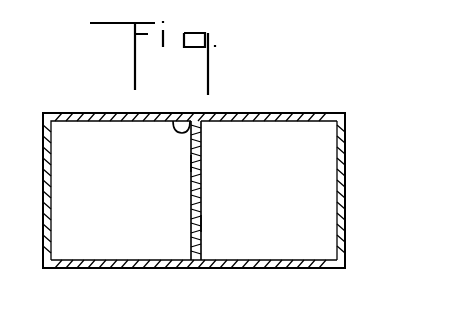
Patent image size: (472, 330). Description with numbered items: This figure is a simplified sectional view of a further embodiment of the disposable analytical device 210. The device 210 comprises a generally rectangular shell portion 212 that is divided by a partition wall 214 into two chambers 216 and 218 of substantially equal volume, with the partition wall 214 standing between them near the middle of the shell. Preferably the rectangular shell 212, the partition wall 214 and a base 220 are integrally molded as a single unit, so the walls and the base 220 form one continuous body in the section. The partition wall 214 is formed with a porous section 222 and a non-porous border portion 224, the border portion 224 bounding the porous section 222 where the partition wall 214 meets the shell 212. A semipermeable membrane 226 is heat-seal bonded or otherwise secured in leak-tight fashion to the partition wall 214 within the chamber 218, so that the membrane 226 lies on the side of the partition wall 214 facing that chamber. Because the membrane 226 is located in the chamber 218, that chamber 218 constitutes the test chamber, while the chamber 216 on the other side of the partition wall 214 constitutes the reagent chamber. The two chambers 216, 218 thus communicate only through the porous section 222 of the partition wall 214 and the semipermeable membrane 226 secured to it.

The disposable analytical device 210 is at (400, 103).
The shell portion 212 is at (347, 186).
The partition wall 214 is at (188, 199).
The reagent chamber 216 is at (300, 201).
The test chamber 218 is at (127, 179).
The base 220 is at (150, 248).
The porous section 222 is at (190, 164).
The non-porous border portion 224 is at (171, 122).
The semipermeable membrane 226 is at (203, 223).